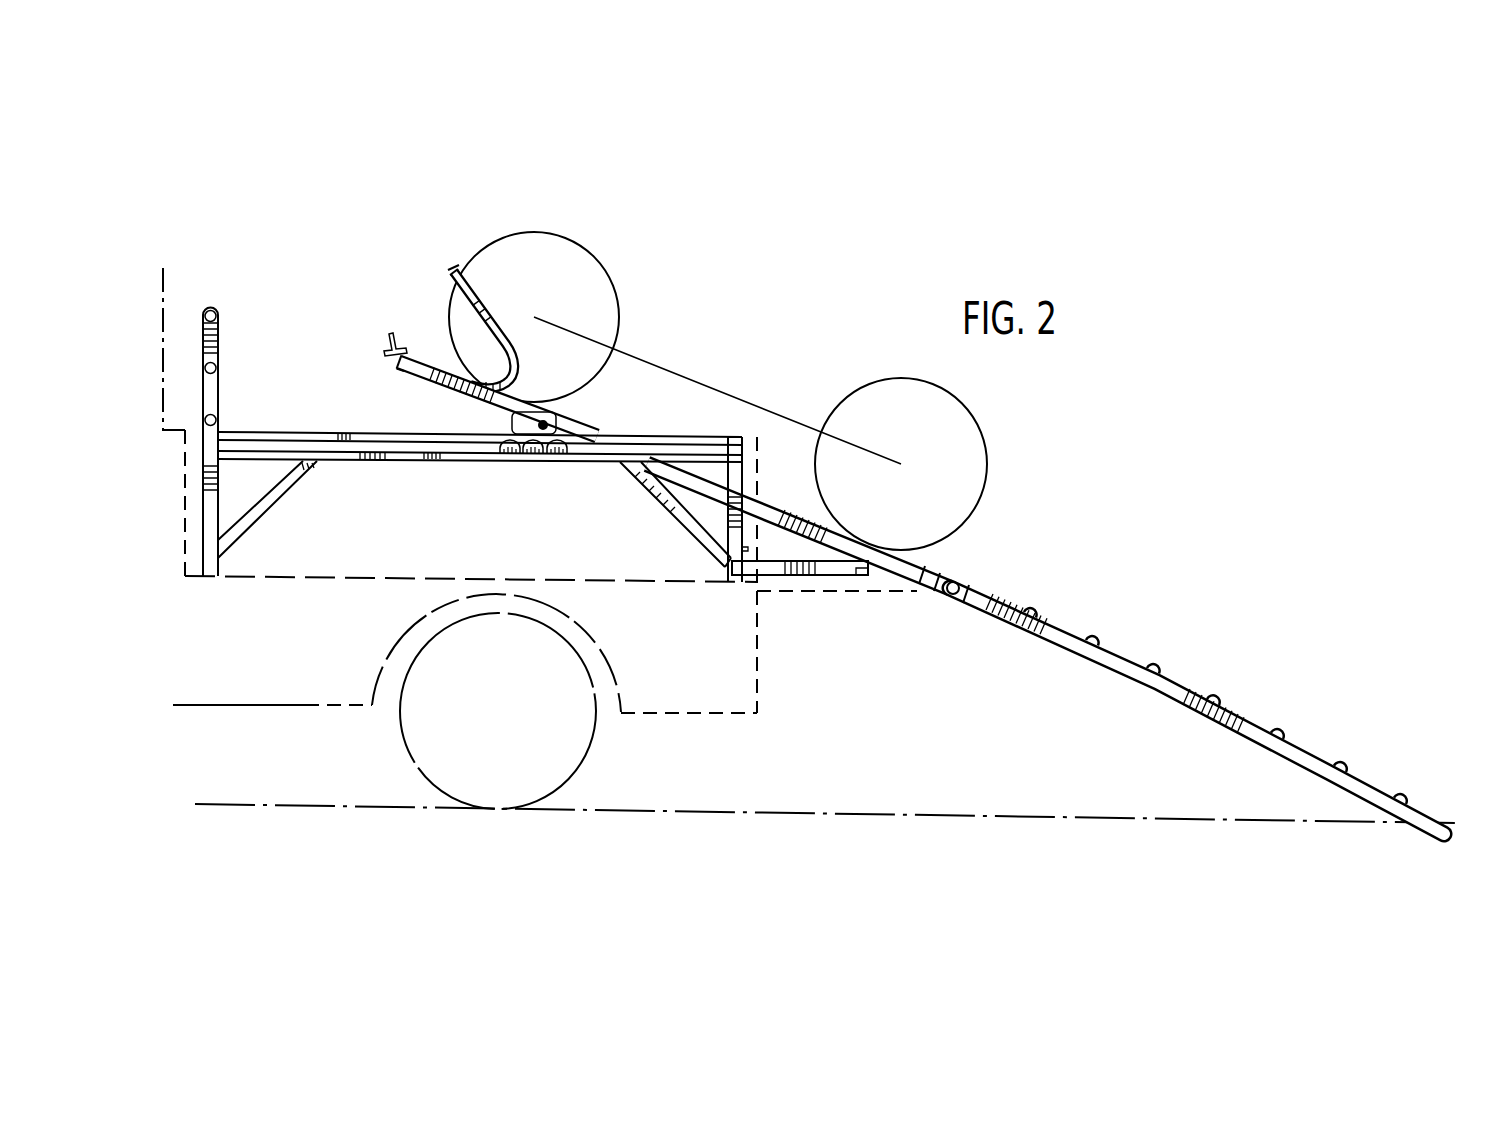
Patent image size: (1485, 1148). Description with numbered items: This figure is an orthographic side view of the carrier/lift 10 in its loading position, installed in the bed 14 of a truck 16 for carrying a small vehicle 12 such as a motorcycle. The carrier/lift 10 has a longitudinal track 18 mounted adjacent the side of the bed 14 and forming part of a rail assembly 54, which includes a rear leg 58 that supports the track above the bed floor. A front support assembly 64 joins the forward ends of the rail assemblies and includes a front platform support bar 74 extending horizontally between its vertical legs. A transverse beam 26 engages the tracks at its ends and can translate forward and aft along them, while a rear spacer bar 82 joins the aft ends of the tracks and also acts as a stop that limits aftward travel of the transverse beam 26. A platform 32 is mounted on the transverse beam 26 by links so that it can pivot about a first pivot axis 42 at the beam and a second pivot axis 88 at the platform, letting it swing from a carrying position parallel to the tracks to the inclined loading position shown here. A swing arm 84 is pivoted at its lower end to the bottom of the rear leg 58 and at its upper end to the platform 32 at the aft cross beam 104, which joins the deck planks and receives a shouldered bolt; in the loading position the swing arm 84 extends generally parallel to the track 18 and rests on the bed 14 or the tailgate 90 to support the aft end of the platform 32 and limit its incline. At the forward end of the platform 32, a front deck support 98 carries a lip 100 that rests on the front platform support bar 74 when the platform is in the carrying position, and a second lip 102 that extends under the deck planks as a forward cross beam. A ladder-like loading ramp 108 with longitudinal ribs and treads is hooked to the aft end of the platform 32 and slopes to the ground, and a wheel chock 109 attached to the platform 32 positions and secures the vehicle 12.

The carrier/lift 10 is at (354, 383).
The small vehicle 12 is at (652, 352).
The bed 14 is at (438, 562).
The truck 16 is at (234, 673).
The left longitudinal track 18 is at (343, 433).
The transverse beam 26 is at (566, 418).
The platform 32 is at (409, 352).
The first pivot axis 42 is at (574, 462).
The right rail assembly 54 is at (396, 460).
The rear leg 58 is at (712, 552).
The front support assembly 64 is at (204, 318).
The front platform support bar 74 is at (212, 405).
The rear spacer bar 82 is at (572, 452).
The left swing arm 84 is at (813, 577).
The second pivot axis 88 is at (576, 428).
The tailgate 90 is at (905, 592).
The front deck support 98 is at (428, 322).
The lip 100 is at (401, 349).
The second lip 102 is at (394, 370).
The aft cross beam 104 is at (850, 576).
The loading ramp 108 is at (1120, 657).
The wheel chock 109 is at (453, 272).